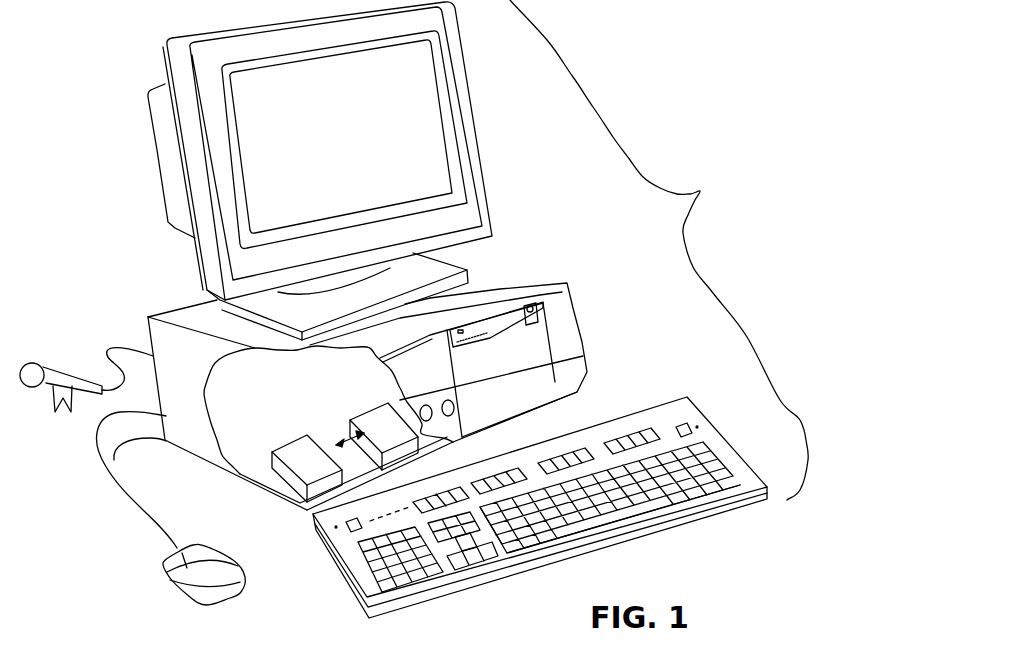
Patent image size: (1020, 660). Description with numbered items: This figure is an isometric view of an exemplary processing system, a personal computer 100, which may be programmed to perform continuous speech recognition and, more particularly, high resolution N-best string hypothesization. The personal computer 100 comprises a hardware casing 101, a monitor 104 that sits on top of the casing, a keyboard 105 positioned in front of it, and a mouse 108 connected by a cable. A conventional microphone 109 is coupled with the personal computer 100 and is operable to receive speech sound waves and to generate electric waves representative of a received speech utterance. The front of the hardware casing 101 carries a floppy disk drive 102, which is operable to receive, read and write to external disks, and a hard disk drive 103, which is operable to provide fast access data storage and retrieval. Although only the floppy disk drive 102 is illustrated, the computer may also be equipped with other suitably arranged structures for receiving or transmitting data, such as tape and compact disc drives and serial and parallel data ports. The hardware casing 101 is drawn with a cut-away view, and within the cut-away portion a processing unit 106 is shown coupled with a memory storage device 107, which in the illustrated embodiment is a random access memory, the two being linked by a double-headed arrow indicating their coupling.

The personal computer 100 is at (659, 250).
The hardware casing 101 is at (557, 278).
The floppy disk drive 102 is at (545, 313).
The hard disk drive 103 is at (515, 347).
The monitor 104 is at (197, 253).
The keyboard 105 is at (693, 407).
The processing unit 106 is at (374, 411).
The memory storage device 107 is at (279, 448).
The mouse 108 is at (160, 563).
The microphone 109 is at (78, 380).